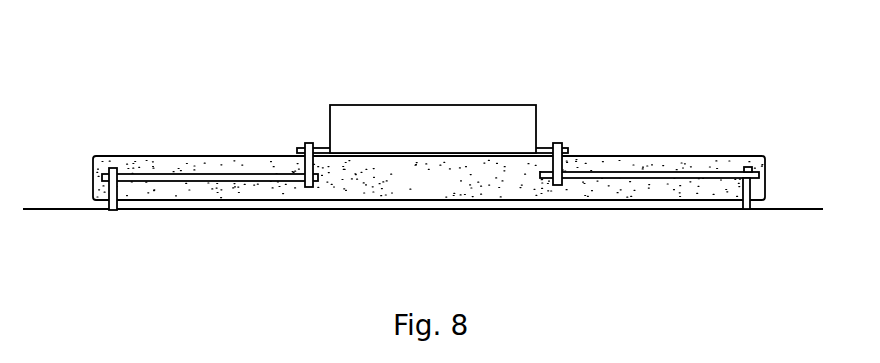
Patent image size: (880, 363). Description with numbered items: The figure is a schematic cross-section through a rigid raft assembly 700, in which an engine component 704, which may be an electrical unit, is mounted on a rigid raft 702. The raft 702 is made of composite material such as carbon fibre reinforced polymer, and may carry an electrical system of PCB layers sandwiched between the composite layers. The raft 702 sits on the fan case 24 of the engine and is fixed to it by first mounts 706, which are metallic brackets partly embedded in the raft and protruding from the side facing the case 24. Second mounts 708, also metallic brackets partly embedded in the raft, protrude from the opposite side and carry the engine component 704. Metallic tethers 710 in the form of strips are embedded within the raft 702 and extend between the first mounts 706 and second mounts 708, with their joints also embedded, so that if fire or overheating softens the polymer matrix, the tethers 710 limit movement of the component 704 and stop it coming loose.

The rigid raft assembly 700 is at (610, 88).
The rigid raft 702 is at (449, 191).
The engine component 704 is at (451, 143).
The first mounts 706 is at (112, 197).
The second mounts 708 is at (308, 160).
The tethers 710 is at (668, 175).
The fan case 24 is at (442, 238).